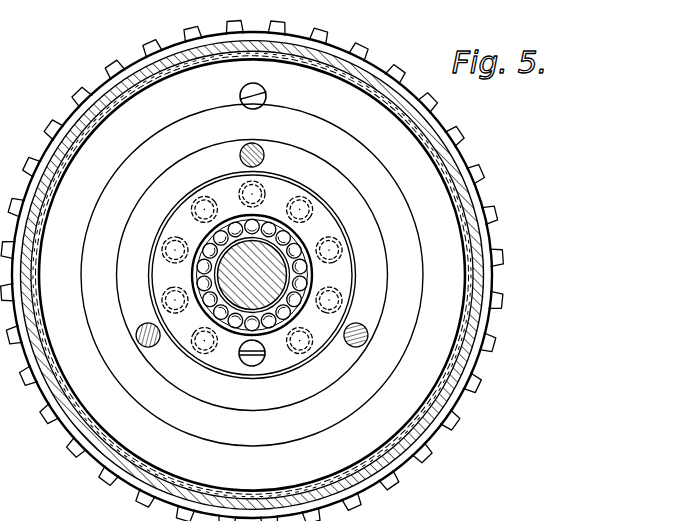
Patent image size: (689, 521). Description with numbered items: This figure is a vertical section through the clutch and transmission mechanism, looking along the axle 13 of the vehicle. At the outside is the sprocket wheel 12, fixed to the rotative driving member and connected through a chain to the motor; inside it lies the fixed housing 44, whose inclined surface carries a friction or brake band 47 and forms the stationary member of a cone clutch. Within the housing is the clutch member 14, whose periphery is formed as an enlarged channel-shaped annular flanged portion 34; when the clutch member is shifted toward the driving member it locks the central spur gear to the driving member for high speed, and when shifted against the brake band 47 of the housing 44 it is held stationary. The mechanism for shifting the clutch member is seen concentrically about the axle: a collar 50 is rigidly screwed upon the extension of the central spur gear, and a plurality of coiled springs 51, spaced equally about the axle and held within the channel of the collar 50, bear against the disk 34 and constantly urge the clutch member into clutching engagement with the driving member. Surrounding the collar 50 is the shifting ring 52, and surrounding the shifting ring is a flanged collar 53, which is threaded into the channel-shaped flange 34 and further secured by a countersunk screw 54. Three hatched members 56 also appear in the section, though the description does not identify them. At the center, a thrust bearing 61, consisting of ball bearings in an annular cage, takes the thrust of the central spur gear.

The sprocket wheel 12 is at (492, 208).
The axle 13 is at (232, 270).
The clutch member 14 is at (470, 275).
The channel-shaped annular flanged portion 34 is at (400, 137).
The housing 44 is at (375, 62).
The brake band 47 is at (313, 72).
The collar 50 is at (180, 221).
The coiled springs 51 is at (266, 187).
The shifting ring 52 is at (362, 198).
The flanged collar 53 is at (400, 213).
The screw 54 is at (264, 97).
The bolts 56 is at (264, 152).
The thrust bearing 61 is at (275, 325).